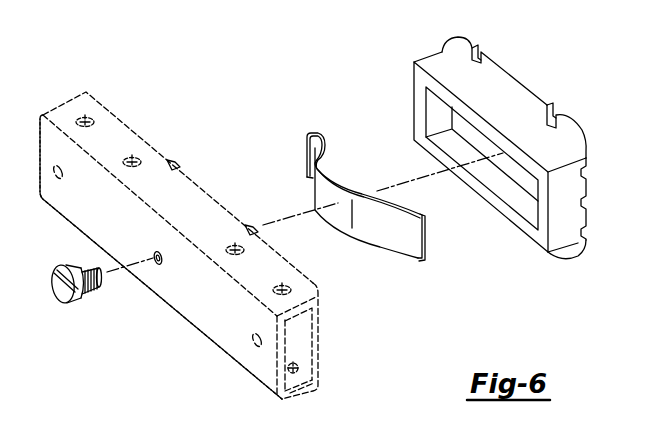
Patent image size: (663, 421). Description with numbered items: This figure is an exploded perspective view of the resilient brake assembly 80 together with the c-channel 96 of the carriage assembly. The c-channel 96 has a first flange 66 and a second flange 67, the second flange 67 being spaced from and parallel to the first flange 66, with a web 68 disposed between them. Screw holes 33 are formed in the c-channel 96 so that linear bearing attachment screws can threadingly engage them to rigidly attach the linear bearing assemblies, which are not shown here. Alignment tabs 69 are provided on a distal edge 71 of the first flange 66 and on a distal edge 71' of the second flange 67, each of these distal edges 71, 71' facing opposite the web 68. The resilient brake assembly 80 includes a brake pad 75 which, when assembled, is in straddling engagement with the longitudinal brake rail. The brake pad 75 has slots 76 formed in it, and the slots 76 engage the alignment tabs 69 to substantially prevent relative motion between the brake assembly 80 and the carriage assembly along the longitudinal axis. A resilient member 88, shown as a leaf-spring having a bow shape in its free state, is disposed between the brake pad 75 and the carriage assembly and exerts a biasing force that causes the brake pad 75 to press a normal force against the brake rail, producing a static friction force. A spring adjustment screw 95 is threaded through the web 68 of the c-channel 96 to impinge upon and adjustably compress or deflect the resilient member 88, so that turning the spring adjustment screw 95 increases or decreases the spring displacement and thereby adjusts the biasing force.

The resilient brake assembly 80 is at (293, 78).
The c-channel 96 is at (55, 101).
The first flange 66 is at (88, 97).
The web 68 is at (90, 208).
The screw holes 33 is at (83, 113).
The alignment tabs 69 is at (173, 159).
The distal edge 71 is at (327, 338).
The distal edge 71' is at (323, 344).
The second flange 67 is at (317, 367).
The spring adjustment screw 95 is at (56, 290).
The resilient member 88 is at (338, 183).
The brake pad 75 is at (434, 54).
The slots 76 is at (478, 52).